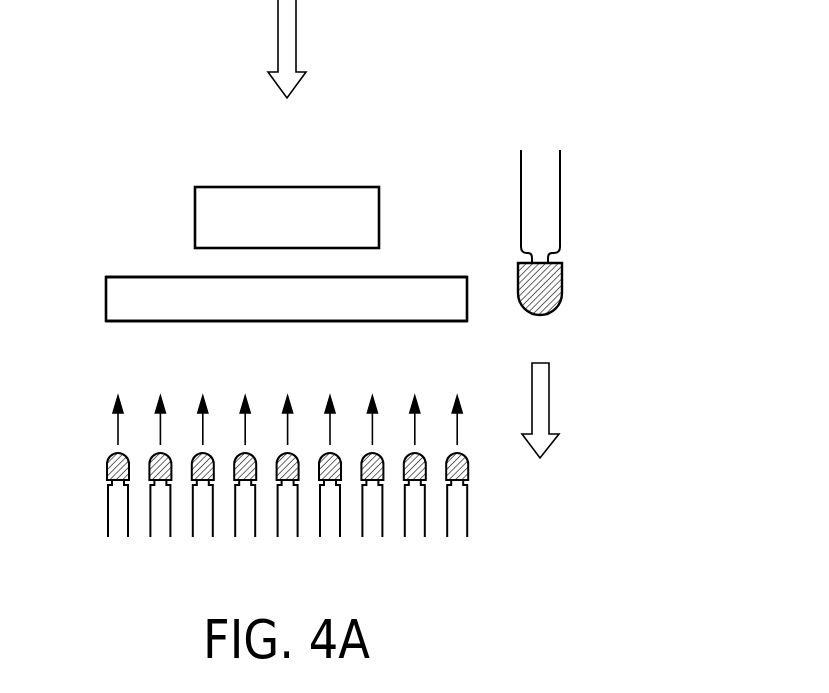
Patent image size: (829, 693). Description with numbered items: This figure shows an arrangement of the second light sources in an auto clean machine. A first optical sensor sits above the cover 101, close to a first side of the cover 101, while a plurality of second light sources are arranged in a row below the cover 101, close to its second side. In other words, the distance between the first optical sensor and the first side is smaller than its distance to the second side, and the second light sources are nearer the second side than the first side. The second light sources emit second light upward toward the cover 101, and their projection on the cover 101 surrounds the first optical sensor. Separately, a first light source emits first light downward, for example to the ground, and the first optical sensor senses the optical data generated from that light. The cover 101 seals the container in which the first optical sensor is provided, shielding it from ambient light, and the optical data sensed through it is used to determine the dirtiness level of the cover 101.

The cover 101 is at (85, 261).